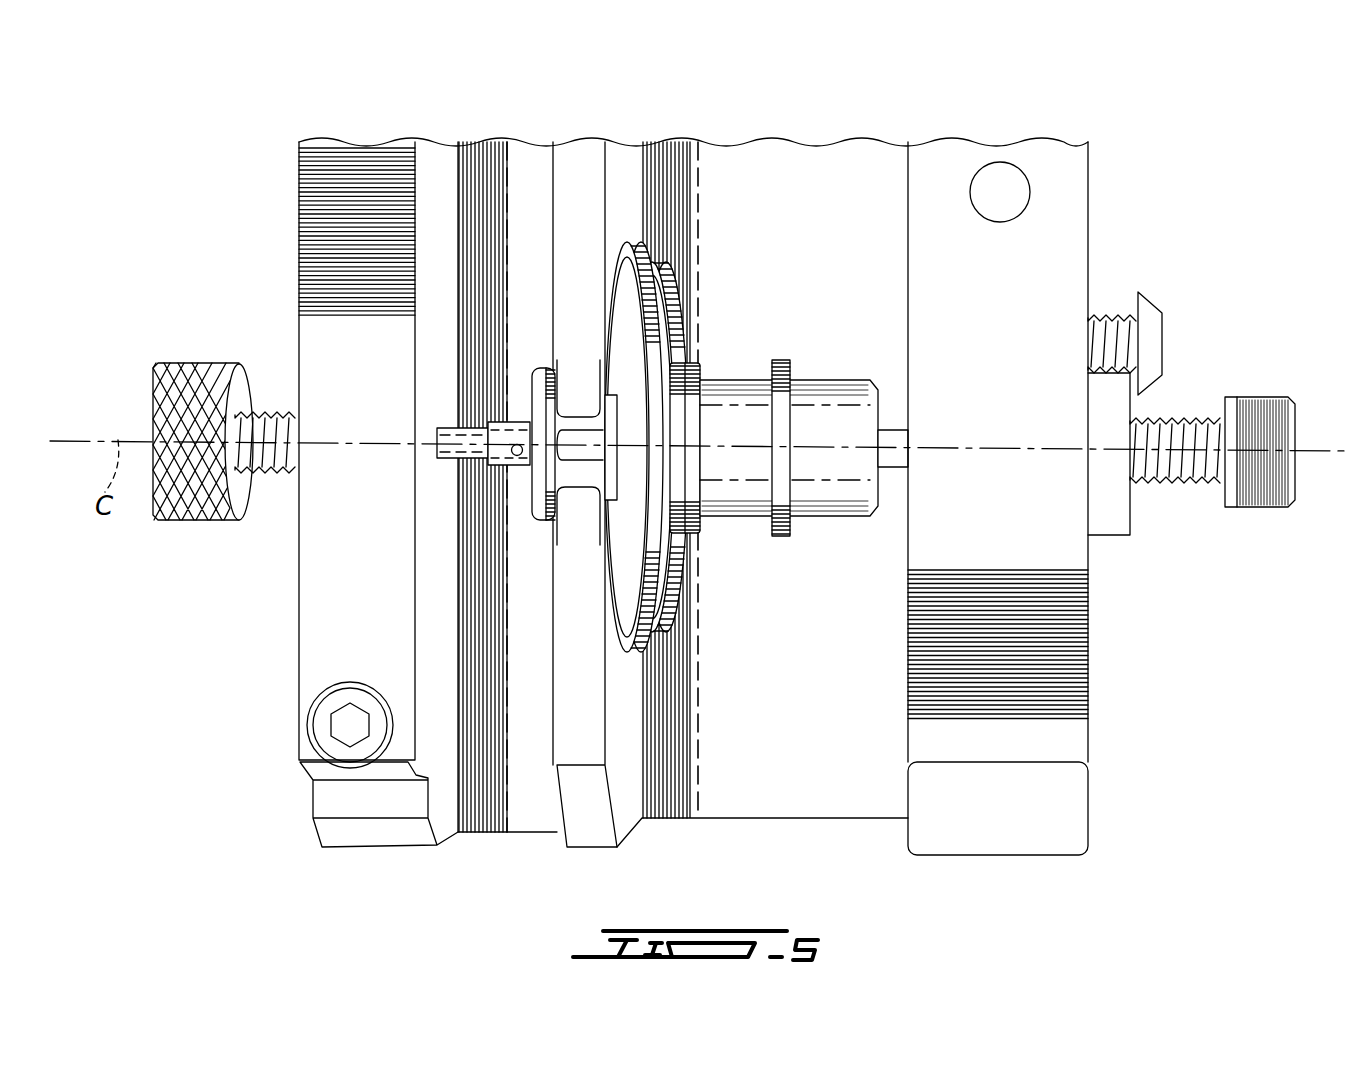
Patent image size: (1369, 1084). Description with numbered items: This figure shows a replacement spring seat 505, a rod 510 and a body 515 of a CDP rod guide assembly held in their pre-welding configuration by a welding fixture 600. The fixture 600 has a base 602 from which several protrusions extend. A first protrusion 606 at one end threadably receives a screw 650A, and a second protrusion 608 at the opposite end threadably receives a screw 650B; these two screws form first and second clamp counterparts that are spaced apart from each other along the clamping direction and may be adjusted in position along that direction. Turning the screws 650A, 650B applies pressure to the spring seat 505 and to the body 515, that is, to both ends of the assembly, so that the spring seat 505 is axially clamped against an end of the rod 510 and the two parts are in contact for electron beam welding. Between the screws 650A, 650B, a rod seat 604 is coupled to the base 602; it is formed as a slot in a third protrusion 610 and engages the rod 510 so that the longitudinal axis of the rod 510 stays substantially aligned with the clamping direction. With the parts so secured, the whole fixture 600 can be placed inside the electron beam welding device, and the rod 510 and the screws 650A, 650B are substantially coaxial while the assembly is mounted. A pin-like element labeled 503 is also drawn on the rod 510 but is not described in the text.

The welding fixture 600 is at (1030, 120).
The base 602 is at (838, 770).
The rod seat 604 is at (582, 487).
The first protrusion 606 is at (356, 178).
The second protrusion 608 is at (1035, 568).
The third protrusion 610 is at (582, 717).
The pin shaft 503 is at (518, 428).
The spring seat 505 is at (547, 367).
The rod 510 is at (578, 440).
The body 515 is at (652, 290).
The screw 650A is at (200, 400).
The screw 650B is at (1265, 415).